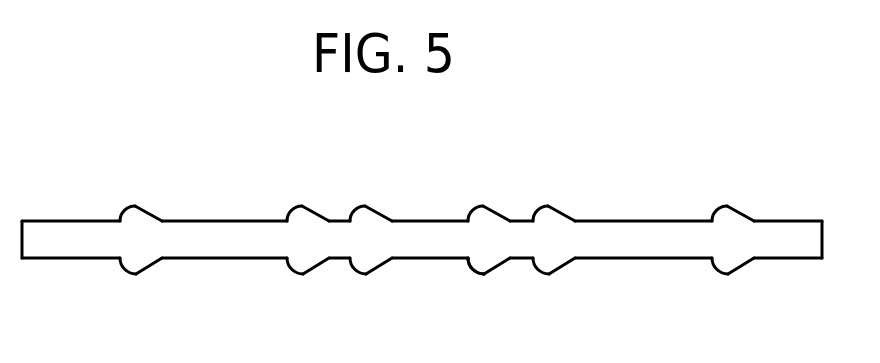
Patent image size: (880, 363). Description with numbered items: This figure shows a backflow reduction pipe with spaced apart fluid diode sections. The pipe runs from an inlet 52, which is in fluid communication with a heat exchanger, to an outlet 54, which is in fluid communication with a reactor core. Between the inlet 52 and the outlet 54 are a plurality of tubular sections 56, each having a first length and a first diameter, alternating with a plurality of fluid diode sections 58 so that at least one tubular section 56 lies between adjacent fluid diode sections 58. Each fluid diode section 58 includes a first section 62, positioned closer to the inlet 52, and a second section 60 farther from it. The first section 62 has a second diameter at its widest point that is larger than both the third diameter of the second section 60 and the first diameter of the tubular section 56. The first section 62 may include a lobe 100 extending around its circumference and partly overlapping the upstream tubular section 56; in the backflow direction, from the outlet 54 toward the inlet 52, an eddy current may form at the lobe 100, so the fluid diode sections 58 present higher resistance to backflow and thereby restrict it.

The inlet 52 is at (20, 222).
The outlet 54 is at (823, 237).
The tubular section 56 is at (633, 230).
The fluid diode section 58 is at (753, 282).
The second section 60 is at (193, 287).
The first section 62 is at (722, 208).
The lobe 100 is at (470, 270).